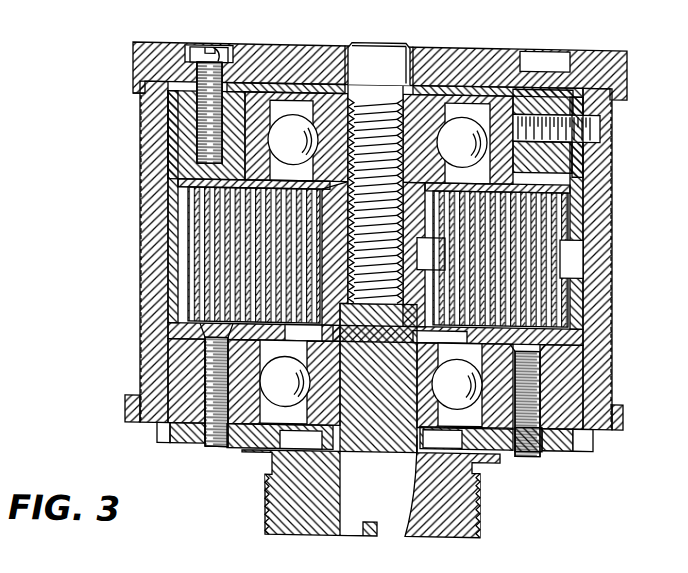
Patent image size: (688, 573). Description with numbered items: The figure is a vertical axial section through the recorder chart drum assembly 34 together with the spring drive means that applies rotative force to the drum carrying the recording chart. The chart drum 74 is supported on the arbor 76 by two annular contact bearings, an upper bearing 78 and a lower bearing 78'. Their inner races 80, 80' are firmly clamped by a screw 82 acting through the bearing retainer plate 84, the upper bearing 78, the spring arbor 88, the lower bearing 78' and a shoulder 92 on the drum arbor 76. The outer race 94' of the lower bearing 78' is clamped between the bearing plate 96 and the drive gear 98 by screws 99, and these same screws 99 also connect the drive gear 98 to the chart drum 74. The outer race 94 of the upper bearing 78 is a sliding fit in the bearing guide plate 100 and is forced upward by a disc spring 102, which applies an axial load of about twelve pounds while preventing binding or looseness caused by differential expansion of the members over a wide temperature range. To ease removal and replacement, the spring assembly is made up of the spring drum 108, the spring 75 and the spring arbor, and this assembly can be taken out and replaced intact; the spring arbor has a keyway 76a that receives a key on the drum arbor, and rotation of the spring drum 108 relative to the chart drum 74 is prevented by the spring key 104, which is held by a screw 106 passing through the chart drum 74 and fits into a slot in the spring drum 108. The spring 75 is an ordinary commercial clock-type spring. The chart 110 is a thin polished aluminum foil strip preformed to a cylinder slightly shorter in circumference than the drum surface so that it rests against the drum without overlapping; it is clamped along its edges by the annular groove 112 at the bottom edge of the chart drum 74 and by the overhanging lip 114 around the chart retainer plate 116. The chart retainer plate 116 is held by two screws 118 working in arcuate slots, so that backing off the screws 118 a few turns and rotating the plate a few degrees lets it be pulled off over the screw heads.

The chart drum assembly 34 is at (452, 32).
The chart drum 74 is at (603, 230).
The spring 75 is at (186, 192).
The arbor 76 is at (468, 527).
The keyway 76a is at (340, 245).
The upper bearing 78 is at (293, 140).
The lower bearing 78' is at (457, 385).
The inner race 80 is at (463, 143).
The inner race 80' is at (285, 382).
The screw 82 is at (357, 41).
The bearing retainer plate 84 is at (297, 75).
The spring arbor 88 is at (424, 272).
The shoulder 92 is at (406, 529).
The outer race 94 is at (545, 50).
The outer race 94' is at (506, 452).
The bearing plate 96 is at (167, 327).
The drive gear 98 is at (157, 430).
The screws 99 is at (208, 444).
The bearing guide plate 100 is at (560, 155).
The disc spring 102 is at (590, 176).
The spring key 104 is at (617, 99).
The screw 106 is at (610, 120).
The spring drum 108 is at (578, 316).
The chart 110 is at (138, 282).
The annular groove 112 is at (139, 394).
The overhanging lip 114 is at (133, 93).
The chart retainer plate 116 is at (600, 50).
The screws 118 is at (212, 45).